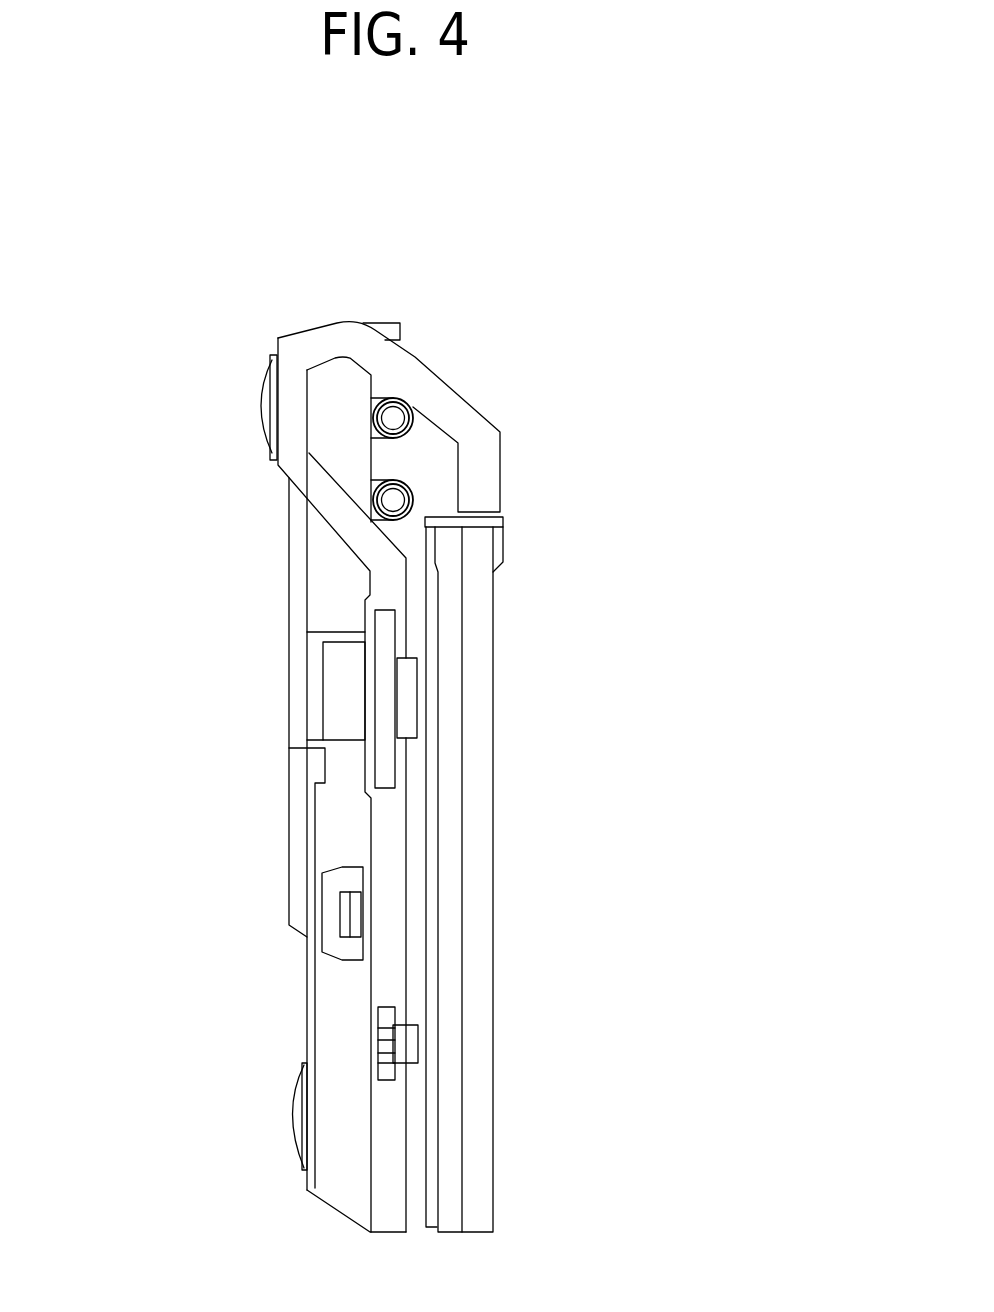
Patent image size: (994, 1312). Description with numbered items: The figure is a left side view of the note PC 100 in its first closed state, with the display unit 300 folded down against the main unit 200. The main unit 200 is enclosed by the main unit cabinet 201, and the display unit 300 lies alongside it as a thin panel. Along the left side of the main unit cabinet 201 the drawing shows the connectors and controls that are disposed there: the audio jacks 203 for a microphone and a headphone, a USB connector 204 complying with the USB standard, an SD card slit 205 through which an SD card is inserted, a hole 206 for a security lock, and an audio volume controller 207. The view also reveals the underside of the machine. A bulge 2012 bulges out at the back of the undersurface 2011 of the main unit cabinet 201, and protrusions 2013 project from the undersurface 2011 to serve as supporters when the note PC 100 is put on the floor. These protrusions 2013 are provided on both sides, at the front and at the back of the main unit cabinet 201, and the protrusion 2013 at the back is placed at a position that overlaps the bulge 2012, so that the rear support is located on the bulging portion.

The note PC 100 is at (545, 272).
The main unit 200 is at (258, 755).
The main unit cabinet 201 is at (345, 1040).
The undersurface 2011 is at (300, 962).
The bulge 2012 is at (276, 347).
The protrusions 2013 is at (262, 402).
The audio jacks 203 is at (394, 482).
The USB connector 204 is at (342, 682).
The SD card slit 205 is at (383, 675).
The hole for security lock 206 is at (358, 917).
The audio volume controller 207 is at (385, 1044).
The display unit 300 is at (527, 667).